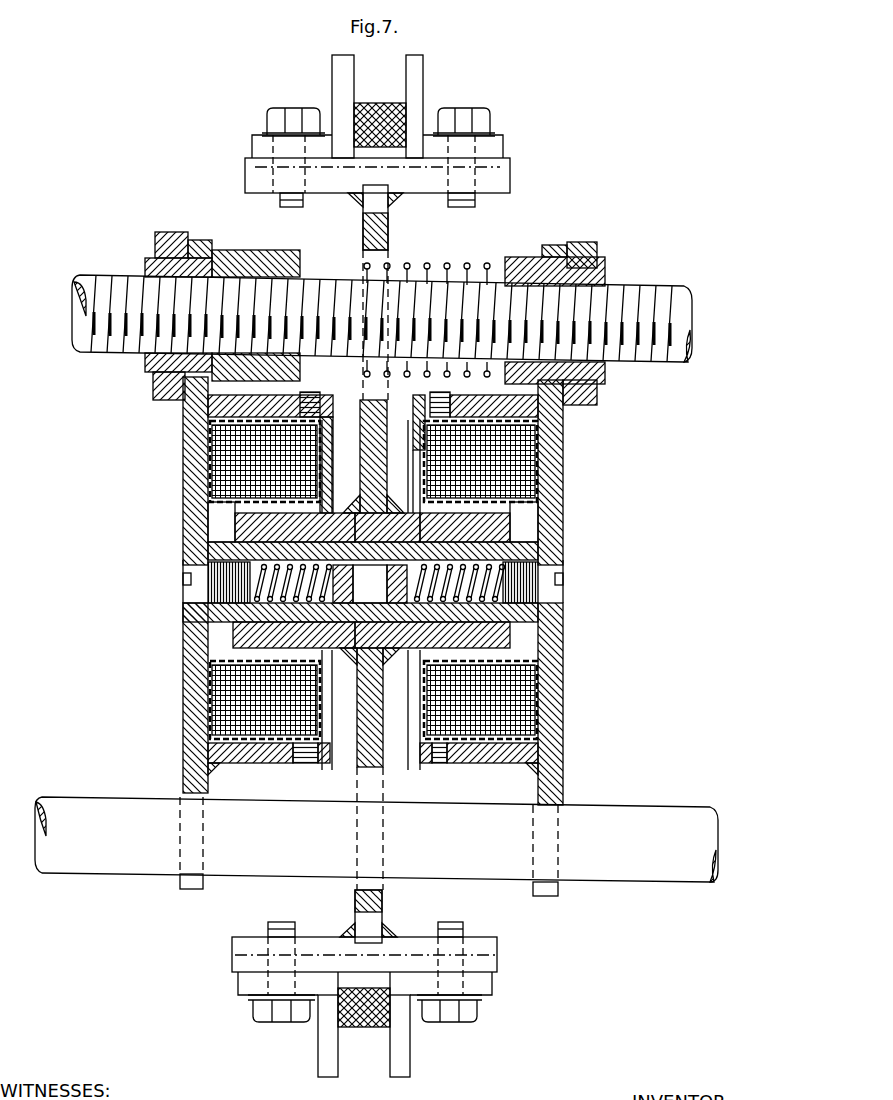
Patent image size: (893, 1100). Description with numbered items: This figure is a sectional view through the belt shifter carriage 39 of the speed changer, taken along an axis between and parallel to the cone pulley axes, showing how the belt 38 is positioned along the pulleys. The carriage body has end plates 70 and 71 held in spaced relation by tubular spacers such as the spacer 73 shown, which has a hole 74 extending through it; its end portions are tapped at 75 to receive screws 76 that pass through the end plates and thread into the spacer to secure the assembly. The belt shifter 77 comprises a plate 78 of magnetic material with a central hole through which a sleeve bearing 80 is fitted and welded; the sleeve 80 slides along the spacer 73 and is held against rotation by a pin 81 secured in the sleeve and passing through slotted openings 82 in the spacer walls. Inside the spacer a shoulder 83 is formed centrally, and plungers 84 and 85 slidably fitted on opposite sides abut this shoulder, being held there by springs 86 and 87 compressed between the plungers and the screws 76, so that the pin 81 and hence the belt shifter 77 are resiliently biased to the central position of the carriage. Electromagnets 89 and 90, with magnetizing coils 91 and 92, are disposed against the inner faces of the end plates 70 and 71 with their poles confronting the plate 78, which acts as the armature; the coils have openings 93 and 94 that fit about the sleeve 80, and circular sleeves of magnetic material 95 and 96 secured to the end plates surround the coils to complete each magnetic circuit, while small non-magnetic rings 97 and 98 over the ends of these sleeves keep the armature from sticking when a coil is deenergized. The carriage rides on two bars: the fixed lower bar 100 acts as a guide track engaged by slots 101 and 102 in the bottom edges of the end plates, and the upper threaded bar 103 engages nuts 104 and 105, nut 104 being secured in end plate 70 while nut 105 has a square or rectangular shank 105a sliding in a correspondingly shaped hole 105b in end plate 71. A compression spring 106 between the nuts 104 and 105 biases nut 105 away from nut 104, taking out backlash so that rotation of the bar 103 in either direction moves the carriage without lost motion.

The belt 38 is at (378, 103).
The belt shifter carriage 39 is at (528, 116).
The belt shifter 77 is at (423, 80).
The end plate 70 is at (185, 493).
The end plate 71 is at (560, 494).
The tubular spacer 73 is at (208, 698).
The hole 74 is at (536, 704).
The tapped end portions 75 is at (208, 553).
The screws 76 is at (190, 593).
The plate 78 is at (363, 449).
The sleeve bearing 80 is at (405, 650).
The pin 81 is at (388, 527).
The slotted opening 82 is at (432, 635).
The shoulder 83 is at (294, 635).
The plunger 84 is at (295, 527).
The plunger 85 is at (465, 527).
The spring 86 is at (280, 604).
The spring 87 is at (445, 604).
The electromagnet 89 is at (208, 428).
The electromagnet 90 is at (575, 433).
The magnetizing coil 91 is at (212, 453).
The magnetizing coil 92 is at (537, 472).
The opening 93 is at (208, 512).
The opening 94 is at (538, 512).
The circular sleeve of magnetic material 95 is at (247, 765).
The circular sleeve of magnetic material 96 is at (483, 766).
The non-magnetic ring 97 is at (300, 768).
The non-magnetic ring 98 is at (458, 772).
The lower bar 100 is at (637, 876).
The slot 101 is at (200, 799).
The slot 102 is at (555, 806).
The threaded bar 103 is at (389, 310).
The nut 104 is at (240, 250).
The nut 105 is at (520, 257).
The shank 105a is at (533, 257).
The hole 105b is at (557, 247).
The compression spring 106 is at (438, 265).